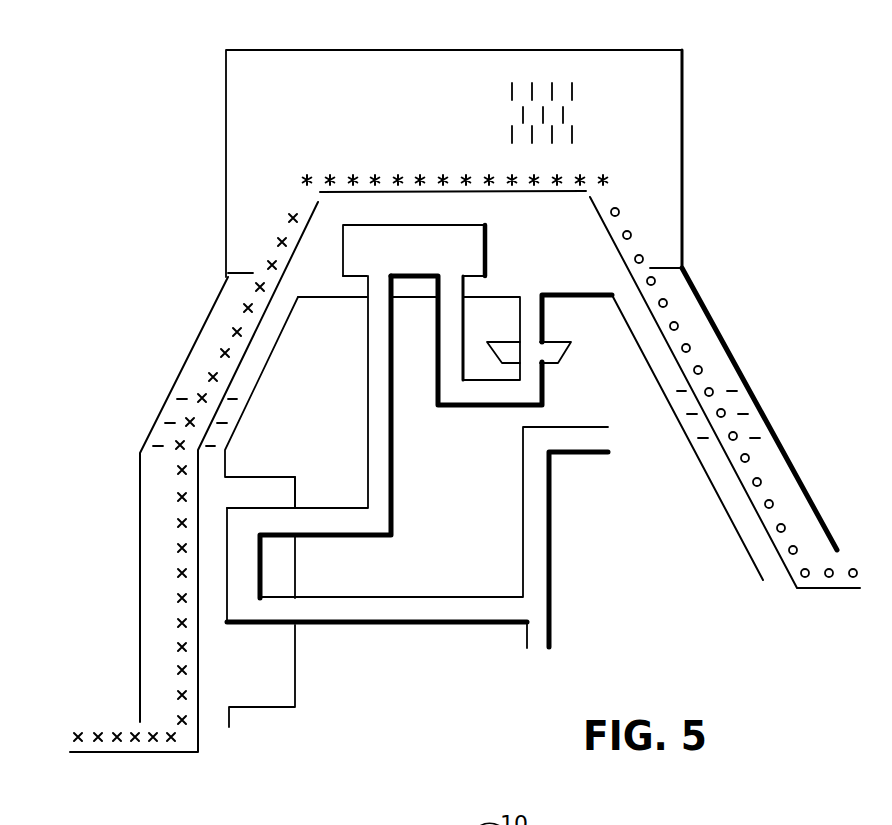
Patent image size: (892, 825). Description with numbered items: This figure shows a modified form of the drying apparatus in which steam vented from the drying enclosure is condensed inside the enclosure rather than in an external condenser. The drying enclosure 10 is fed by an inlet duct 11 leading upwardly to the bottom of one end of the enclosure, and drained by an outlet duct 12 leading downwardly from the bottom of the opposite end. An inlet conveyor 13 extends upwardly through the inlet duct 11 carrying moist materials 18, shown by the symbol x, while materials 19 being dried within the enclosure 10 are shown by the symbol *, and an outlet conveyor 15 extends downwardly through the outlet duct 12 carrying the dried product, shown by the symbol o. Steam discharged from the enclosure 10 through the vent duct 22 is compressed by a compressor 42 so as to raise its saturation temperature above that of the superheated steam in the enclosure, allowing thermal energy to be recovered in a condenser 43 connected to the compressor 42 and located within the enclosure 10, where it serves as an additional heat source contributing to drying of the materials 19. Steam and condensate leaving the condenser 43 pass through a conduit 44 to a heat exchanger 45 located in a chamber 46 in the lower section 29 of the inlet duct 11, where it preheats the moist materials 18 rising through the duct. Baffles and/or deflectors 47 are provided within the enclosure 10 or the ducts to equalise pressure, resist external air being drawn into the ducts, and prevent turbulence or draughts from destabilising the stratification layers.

The drying enclosure 10 is at (470, 50).
The inlet duct 11 is at (165, 398).
The outlet duct 12 is at (737, 357).
The inlet conveyor 13 is at (247, 347).
The outlet conveyor 15 is at (737, 473).
The moist materials 18 is at (153, 740).
The materials 19 is at (488, 175).
The vent duct 22 is at (545, 317).
The lower section 29 is at (138, 477).
The compressor 42 is at (570, 350).
The condenser 43 is at (388, 225).
The conduit 44 is at (367, 410).
The heat exchanger 45 is at (262, 568).
The chamber 46 is at (297, 680).
The baffles and/or deflectors 47 is at (253, 273).